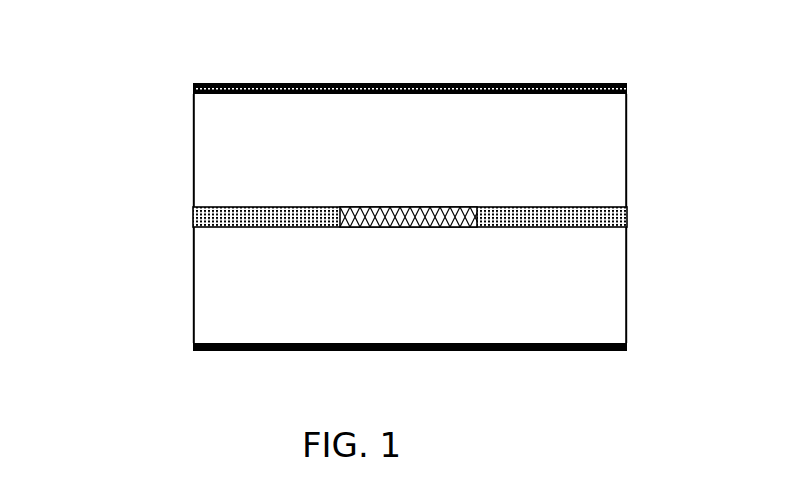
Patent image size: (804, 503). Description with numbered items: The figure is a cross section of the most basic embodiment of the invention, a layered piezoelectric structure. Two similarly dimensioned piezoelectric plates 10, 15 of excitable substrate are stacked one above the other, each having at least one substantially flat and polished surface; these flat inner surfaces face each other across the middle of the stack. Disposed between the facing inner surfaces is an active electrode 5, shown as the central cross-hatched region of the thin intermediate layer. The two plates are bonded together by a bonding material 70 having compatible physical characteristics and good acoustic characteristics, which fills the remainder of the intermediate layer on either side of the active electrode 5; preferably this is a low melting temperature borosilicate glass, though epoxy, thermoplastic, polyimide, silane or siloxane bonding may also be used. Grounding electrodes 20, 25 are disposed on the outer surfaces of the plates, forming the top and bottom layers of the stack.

The active electrode 5 is at (445, 207).
The piezoelectric plate 10 is at (242, 143).
The piezoelectric plate 15 is at (260, 293).
The grounding electrode 20 is at (377, 83).
The grounding electrode 25 is at (413, 351).
The bonding material 70 is at (329, 127).